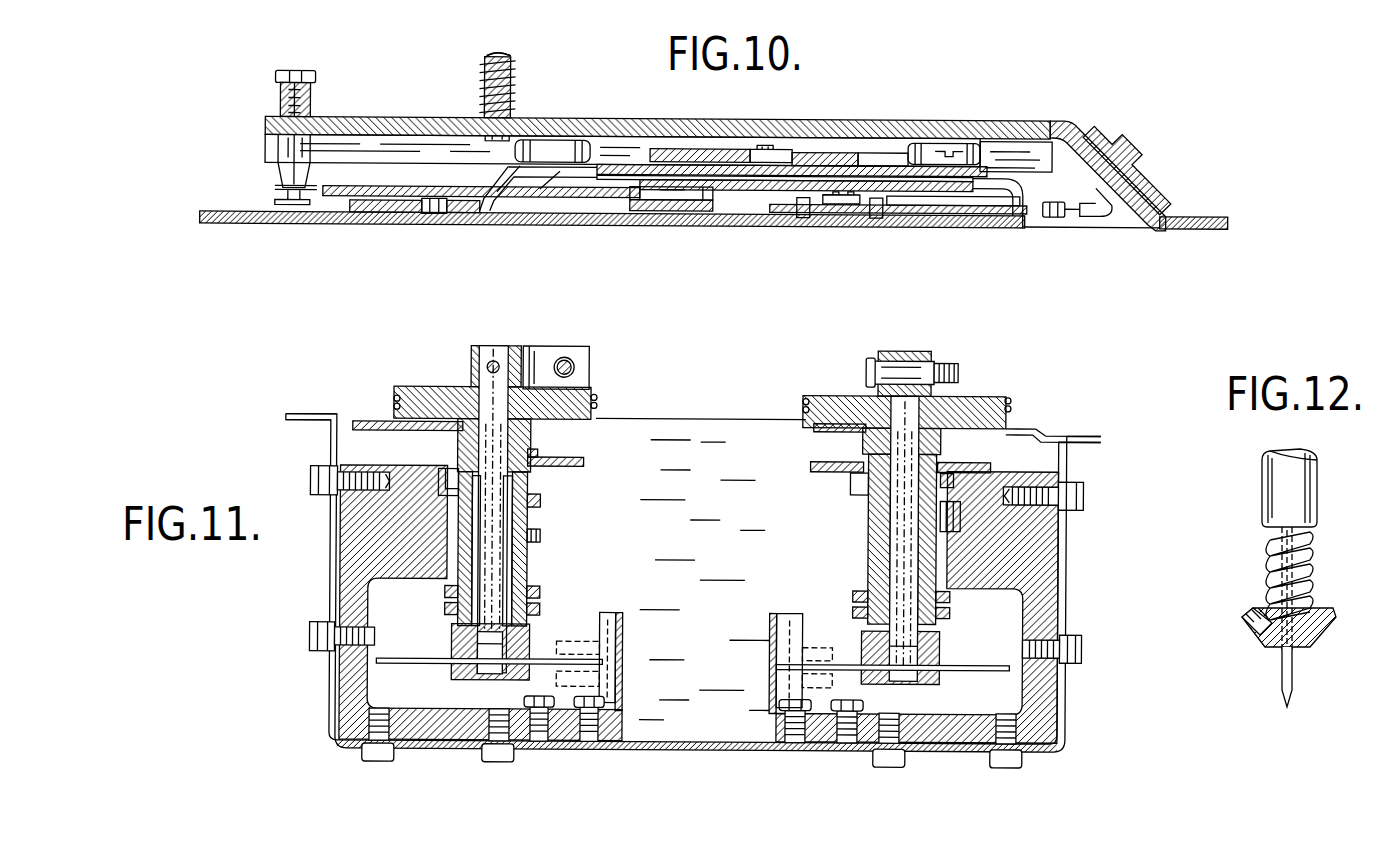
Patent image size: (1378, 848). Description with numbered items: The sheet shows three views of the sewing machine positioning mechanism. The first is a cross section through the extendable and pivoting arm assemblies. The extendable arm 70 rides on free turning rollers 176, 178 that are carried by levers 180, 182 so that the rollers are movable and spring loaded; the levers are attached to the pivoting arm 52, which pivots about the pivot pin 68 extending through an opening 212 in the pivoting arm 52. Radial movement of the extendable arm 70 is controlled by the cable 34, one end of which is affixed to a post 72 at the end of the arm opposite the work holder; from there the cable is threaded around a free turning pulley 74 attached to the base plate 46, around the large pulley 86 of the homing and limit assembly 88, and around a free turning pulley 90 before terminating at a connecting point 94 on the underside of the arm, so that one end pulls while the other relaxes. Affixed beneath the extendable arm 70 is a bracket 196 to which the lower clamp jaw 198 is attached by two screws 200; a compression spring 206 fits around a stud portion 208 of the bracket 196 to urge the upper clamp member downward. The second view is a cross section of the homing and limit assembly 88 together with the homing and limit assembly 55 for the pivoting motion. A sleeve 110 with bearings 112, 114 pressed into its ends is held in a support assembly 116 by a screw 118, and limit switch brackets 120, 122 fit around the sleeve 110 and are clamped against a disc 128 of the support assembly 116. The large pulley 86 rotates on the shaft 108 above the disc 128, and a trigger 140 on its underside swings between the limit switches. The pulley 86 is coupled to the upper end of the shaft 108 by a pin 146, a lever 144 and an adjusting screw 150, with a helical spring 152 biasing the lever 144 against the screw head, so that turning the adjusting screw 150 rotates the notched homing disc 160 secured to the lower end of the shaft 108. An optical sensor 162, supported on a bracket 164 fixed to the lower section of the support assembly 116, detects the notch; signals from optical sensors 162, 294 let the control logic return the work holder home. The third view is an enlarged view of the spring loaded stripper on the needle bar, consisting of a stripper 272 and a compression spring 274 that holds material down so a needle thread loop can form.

In FIG. 10, the extendable arm 70 is at (895, 125).
In FIG. 10, the post 72 is at (285, 176).
In FIG. 10, the compression spring 206 is at (483, 82).
In FIG. 10, the stud portion 208 is at (497, 56).
In FIG. 10, the free turning roller 178 is at (551, 148).
In FIG. 10, the lever 182 is at (672, 152).
In FIG. 10, the lever 180 is at (820, 155).
In FIG. 10, the free turning roller 176 is at (962, 152).
In FIG. 10, the cable 34 is at (600, 192).
In FIG. 10, the pivoting arm 52 is at (505, 180).
In FIG. 10, the free turning pulley 74 is at (685, 205).
In FIG. 10, the opening 212 is at (428, 212).
In FIG. 10, the pivot pin 68 is at (436, 217).
In FIG. 10, the base plate 46 is at (298, 228).
In FIG. 10, the free turning pulley 90 is at (815, 212).
In FIG. 10, the connecting point 94 is at (1055, 216).
In FIG. 10, the bracket 196 is at (1076, 140).
In FIG. 10, the screws 200 is at (1138, 176).
In FIG. 10, the lower clamp jaw 198 is at (1200, 228).
In FIG. 11, the support assembly 116 is at (340, 556).
In FIG. 11, the trigger 140 is at (355, 420).
In FIG. 11, the homing and limit assembly 88 is at (464, 351).
In FIG. 11, the lever 144 is at (588, 350).
In FIG. 11, the adjusting screw 150 is at (564, 358).
In FIG. 11, the helical spring 152 is at (578, 376).
In FIG. 11, the shaft 108 is at (494, 353).
In FIG. 11, the pin 146 is at (488, 369).
In FIG. 11, the large pulley 86 is at (597, 400).
In FIG. 11, the limit switch bracket 120 is at (455, 478).
In FIG. 11, the disc 128 is at (585, 466).
In FIG. 11, the bearing 112 is at (530, 455).
In FIG. 11, the limit switch bracket 122 is at (540, 500).
In FIG. 11, the sleeve 110 is at (514, 515).
In FIG. 11, the screw 118 is at (541, 538).
In FIG. 11, the bearing 114 is at (462, 628).
In FIG. 11, the notched homing disc 160 is at (423, 668).
In FIG. 11, the bracket 164 is at (624, 630).
In FIG. 11, the optical sensor 162 is at (616, 662).
In FIG. 11, the optical sensor 294 is at (798, 652).
In FIG. 11, the homing and limit assembly 55 is at (862, 380).
In FIG. 12, the compression spring 274 is at (1272, 560).
In FIG. 12, the stripper 272 is at (1258, 626).